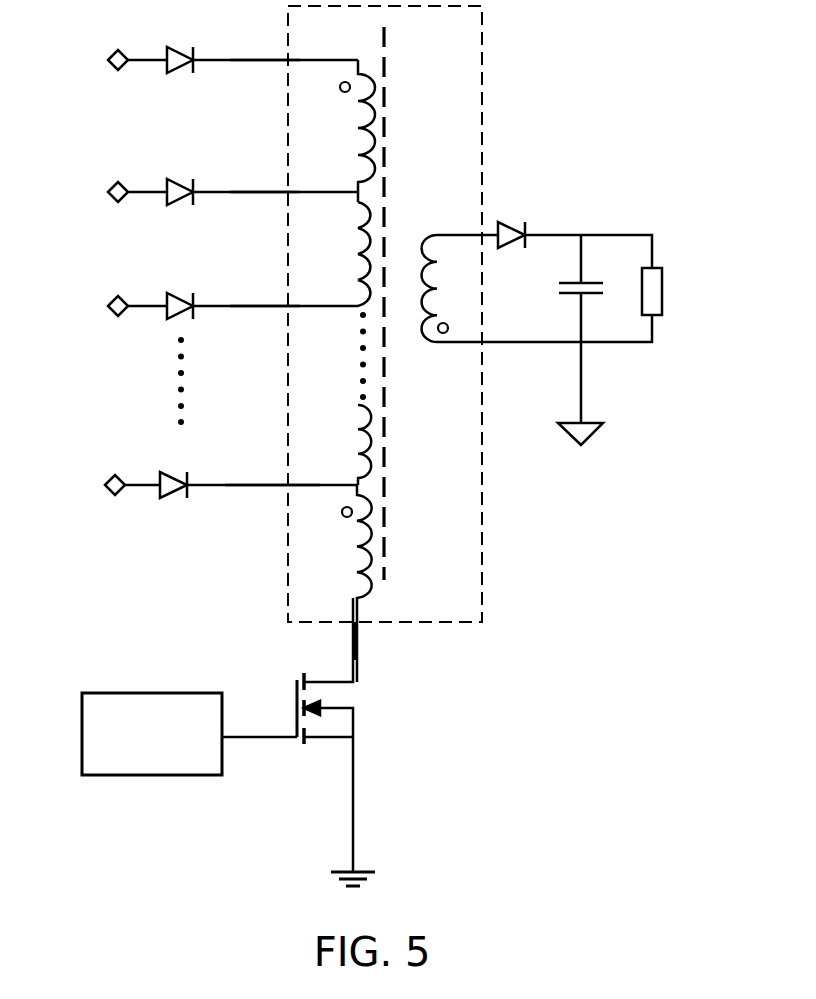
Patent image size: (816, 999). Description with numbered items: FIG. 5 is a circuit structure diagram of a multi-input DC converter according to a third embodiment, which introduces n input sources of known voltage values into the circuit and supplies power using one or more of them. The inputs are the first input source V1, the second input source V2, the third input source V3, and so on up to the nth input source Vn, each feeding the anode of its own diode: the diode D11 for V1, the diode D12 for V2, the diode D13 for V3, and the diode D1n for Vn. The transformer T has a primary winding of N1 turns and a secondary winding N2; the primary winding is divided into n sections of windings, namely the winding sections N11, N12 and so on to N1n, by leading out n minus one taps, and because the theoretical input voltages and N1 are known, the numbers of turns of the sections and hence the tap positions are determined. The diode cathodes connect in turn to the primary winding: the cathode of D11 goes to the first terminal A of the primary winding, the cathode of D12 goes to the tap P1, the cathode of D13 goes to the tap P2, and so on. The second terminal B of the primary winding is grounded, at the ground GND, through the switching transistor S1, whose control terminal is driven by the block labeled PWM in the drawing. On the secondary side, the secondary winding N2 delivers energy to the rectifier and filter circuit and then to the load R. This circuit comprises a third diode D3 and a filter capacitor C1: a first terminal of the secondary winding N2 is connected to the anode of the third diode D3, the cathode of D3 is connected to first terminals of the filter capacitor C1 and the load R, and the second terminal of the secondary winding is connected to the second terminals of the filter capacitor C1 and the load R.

The first input source V1 is at (211, 61).
The second input source V2 is at (210, 193).
The third input source V3 is at (212, 307).
The nth input source Vn is at (210, 486).
The diode D11 is at (182, 44).
The diode D12 is at (185, 171).
The diode D13 is at (186, 289).
The diode D1n is at (173, 468).
The first terminal of the primary winding A is at (265, 48).
The tap P1 is at (265, 176).
The tap P2 is at (265, 291).
The transformer T is at (385, 314).
The winding section N11 is at (340, 131).
The winding section N12 is at (338, 254).
The winding section N1n is at (338, 583).
The secondary winding N2 is at (501, 288).
The second terminal of the primary winding B is at (368, 641).
The third diode D3 is at (539, 217).
The filter capacitor C1 is at (567, 340).
The load R is at (635, 288).
The switching transistor S1 is at (303, 735).
The PWM controller PWM is at (189, 734).
The ground GND is at (354, 899).